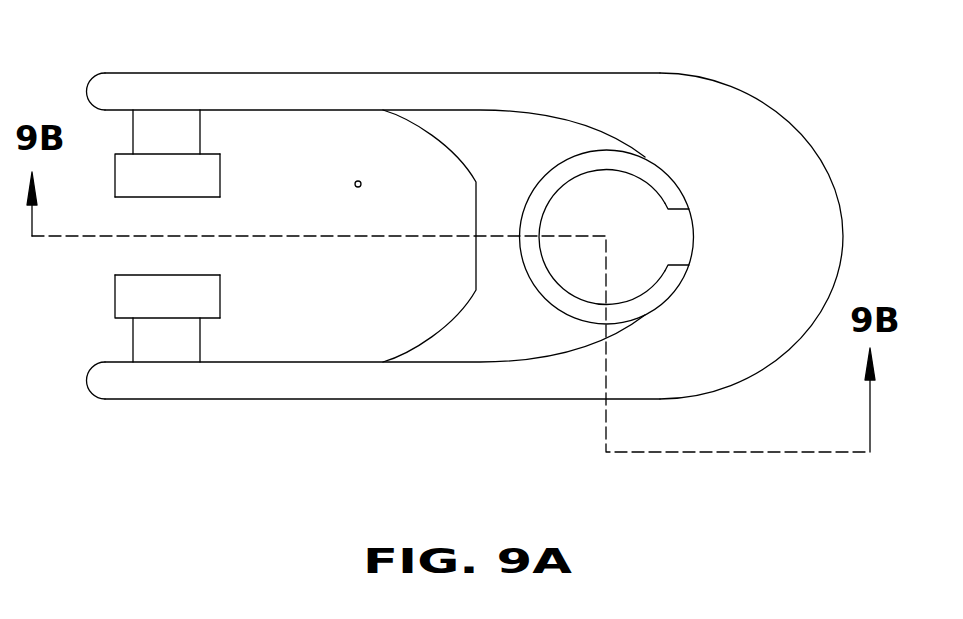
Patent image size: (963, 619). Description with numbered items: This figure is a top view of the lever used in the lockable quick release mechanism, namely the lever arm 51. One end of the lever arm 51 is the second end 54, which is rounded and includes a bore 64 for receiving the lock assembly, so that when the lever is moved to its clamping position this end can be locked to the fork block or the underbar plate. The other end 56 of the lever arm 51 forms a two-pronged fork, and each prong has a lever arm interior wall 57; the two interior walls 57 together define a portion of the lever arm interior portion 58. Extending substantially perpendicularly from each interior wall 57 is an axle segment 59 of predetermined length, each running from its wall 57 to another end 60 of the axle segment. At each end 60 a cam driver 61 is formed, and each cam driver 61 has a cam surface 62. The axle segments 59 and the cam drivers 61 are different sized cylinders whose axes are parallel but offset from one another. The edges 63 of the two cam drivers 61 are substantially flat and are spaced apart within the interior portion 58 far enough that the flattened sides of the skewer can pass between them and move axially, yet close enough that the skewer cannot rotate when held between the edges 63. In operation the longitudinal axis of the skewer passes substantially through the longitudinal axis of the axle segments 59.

The lever arm 51 is at (519, 63).
The end of the lever arm 54 is at (803, 203).
The another end of the lever arm 56 is at (104, 92).
The lever arm interior wall 57 is at (348, 113).
The lever arm interior portion 58 is at (361, 187).
The axle segment 59 is at (172, 136).
The end of the axle segment 60 is at (202, 151).
The cam driver 61 is at (220, 280).
The cam surface 62 is at (204, 167).
The edge of the cam driver 63 is at (200, 197).
The bore 64 is at (603, 198).